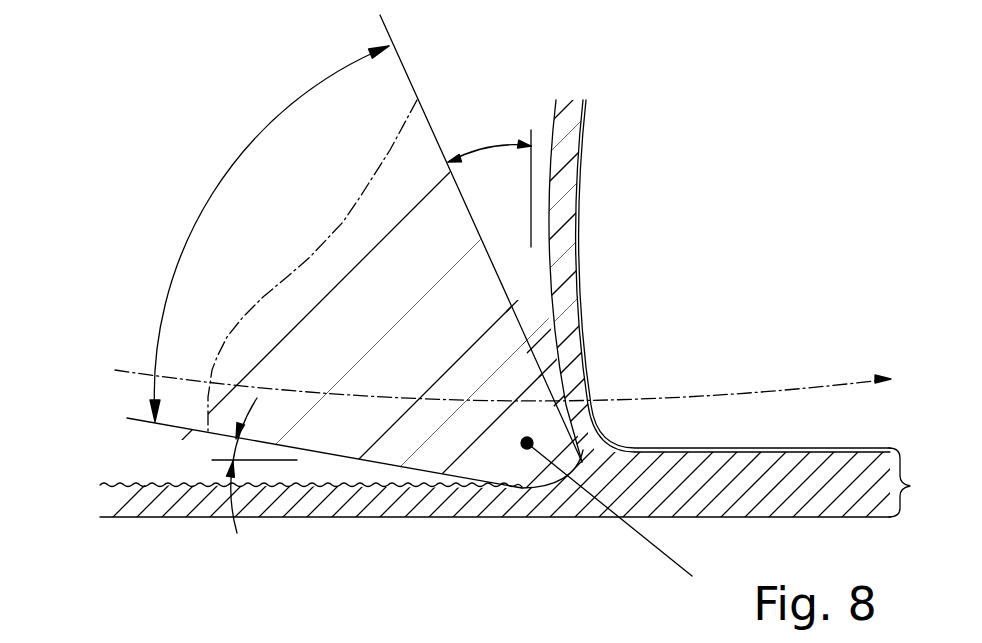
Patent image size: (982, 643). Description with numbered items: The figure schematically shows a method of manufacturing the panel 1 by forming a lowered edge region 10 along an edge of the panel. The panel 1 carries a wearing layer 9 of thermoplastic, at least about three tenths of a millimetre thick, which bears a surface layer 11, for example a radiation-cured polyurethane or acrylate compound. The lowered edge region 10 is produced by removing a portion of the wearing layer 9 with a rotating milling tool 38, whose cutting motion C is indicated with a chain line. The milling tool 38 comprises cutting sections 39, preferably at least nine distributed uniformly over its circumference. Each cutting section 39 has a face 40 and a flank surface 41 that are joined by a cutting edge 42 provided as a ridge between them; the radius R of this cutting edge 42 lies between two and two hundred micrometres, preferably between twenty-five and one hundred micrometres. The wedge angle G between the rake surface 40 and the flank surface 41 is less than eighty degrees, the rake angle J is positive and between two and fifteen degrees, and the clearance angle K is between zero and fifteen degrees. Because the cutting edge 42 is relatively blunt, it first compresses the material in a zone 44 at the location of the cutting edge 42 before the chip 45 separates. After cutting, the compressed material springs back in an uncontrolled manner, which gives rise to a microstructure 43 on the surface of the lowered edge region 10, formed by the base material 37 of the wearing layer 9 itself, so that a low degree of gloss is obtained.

The panel 1 is at (812, 440).
The wearing layer 9 is at (909, 490).
The lowered edge region 10 is at (164, 484).
The surface layer 11 is at (578, 167).
The base material 37 is at (560, 227).
The milling tool 38 is at (435, 107).
The cutting section 39 is at (372, 305).
The face 40 is at (523, 323).
The flank surface 41 is at (377, 464).
The cutting edge 42 is at (576, 480).
The microstructure 43 is at (328, 488).
The zone 44 is at (583, 470).
The chip 45 is at (578, 382).
The wedge angle G is at (269, 234).
The rake angle J is at (489, 184).
The clearance angle K is at (241, 532).
The cutting motion C is at (798, 385).
The radius R is at (654, 552).